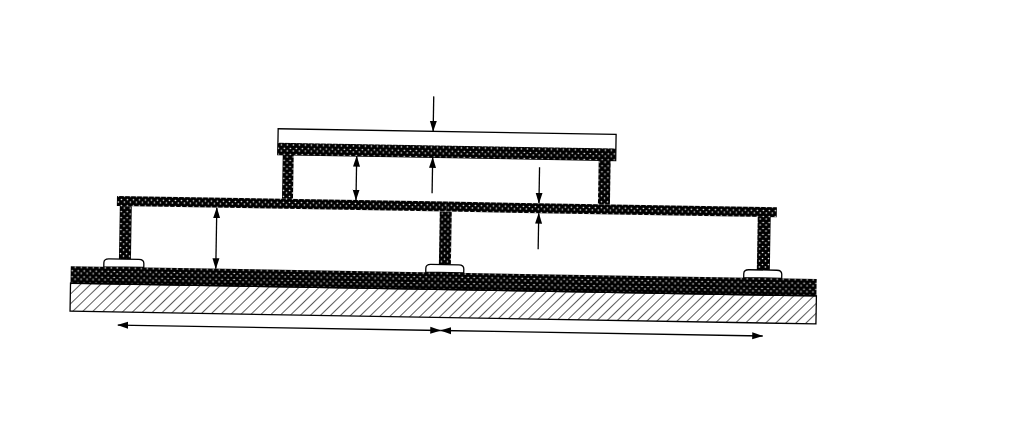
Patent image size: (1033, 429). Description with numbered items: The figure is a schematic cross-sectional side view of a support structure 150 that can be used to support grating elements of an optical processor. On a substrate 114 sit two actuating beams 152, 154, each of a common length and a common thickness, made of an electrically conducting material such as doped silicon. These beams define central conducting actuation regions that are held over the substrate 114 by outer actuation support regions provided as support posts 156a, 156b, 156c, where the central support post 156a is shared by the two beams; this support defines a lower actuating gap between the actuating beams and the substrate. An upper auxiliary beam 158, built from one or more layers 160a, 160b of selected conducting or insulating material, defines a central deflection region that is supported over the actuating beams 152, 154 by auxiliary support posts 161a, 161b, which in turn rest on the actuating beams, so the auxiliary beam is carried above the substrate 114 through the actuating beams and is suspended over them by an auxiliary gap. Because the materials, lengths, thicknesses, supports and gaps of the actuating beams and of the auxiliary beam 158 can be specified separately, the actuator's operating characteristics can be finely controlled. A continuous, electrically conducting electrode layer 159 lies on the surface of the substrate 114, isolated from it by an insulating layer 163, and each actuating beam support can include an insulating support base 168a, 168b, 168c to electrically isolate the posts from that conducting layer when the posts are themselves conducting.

The support structure 150 is at (671, 40).
The auxiliary beam 158 is at (353, 120).
The layer of auxiliary beam 160a is at (479, 131).
The layer of auxiliary beam 160b is at (615, 152).
The auxiliary support post 161a is at (282, 176).
The auxiliary support post 161b is at (611, 172).
The actuating beam 152 is at (277, 208).
The actuating beam 154 is at (622, 218).
The central support post 156a is at (440, 241).
The support post 156b is at (120, 211).
The support post 156c is at (771, 233).
The insulating support base 168a is at (113, 259).
The insulating support base 168b is at (455, 268).
The insulating support base 168c is at (777, 274).
The electrode layer 159 is at (316, 270).
The insulating layer 163 is at (818, 293).
The substrate 114 is at (787, 325).